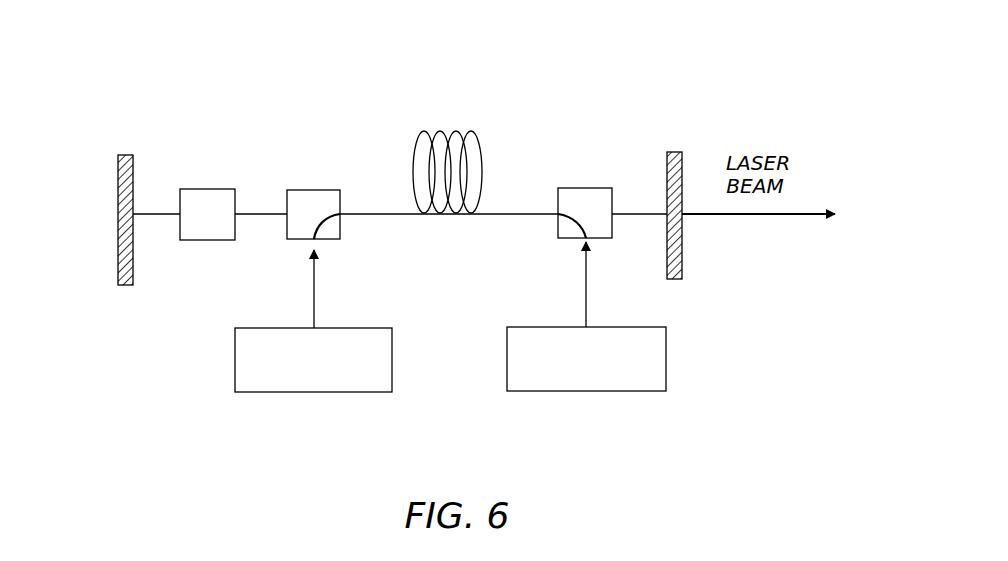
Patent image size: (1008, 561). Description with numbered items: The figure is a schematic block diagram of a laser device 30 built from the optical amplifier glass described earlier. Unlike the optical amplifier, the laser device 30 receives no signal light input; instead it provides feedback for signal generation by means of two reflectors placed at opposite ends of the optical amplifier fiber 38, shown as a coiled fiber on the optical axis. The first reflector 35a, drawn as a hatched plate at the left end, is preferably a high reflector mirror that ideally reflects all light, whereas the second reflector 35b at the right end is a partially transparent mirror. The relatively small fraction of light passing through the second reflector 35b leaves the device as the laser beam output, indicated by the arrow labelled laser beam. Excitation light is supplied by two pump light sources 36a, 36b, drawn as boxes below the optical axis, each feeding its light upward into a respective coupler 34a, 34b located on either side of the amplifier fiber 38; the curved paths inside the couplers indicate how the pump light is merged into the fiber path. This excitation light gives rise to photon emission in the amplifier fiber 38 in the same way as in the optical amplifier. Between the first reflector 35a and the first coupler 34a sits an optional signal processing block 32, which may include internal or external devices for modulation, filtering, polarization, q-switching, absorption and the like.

The laser device 30 is at (579, 65).
The signal processing 32 is at (205, 240).
The coupler 34a is at (307, 190).
The coupler 34b is at (600, 188).
The first reflector 35a is at (125, 285).
The second reflector 35b is at (682, 262).
The pump light source 36a is at (235, 357).
The pump light source 36b is at (666, 355).
The optical amplifier fiber 38 is at (483, 157).